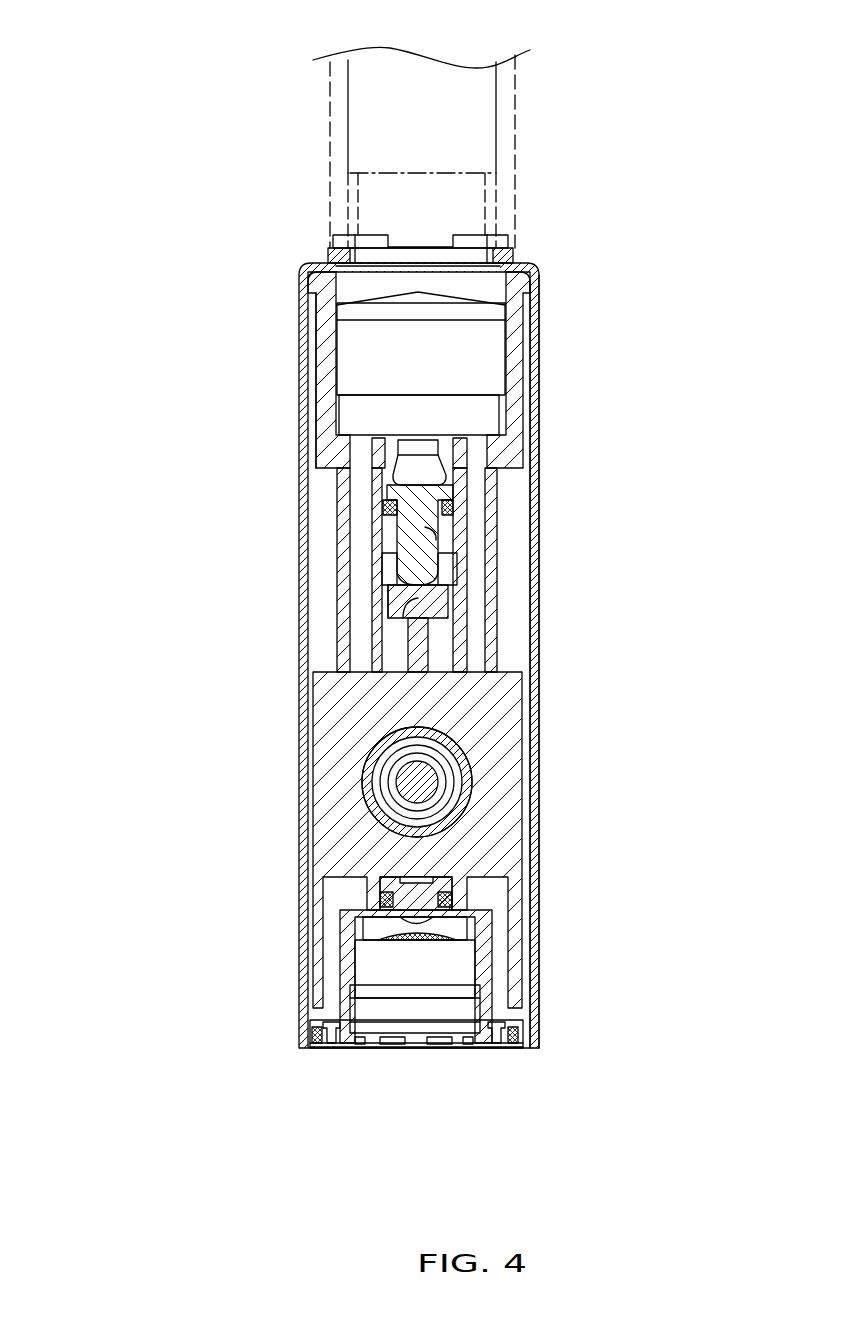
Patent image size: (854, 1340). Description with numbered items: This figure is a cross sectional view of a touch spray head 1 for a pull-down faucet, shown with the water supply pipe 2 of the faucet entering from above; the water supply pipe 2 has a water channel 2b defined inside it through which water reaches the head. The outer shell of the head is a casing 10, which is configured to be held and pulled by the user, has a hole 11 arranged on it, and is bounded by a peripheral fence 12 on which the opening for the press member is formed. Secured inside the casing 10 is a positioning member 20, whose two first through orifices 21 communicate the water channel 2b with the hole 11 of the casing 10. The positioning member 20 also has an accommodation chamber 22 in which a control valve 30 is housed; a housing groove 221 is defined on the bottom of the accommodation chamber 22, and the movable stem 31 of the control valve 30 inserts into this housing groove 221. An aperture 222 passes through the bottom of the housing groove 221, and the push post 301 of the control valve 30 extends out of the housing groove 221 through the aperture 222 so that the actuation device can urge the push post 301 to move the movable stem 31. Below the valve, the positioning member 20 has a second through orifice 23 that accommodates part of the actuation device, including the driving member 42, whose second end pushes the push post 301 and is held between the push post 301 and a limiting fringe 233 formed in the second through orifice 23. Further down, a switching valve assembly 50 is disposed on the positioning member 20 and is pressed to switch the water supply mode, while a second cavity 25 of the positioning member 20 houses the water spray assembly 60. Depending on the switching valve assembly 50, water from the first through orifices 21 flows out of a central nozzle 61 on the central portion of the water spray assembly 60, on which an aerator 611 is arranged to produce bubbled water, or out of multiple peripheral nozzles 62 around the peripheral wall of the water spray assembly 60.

The touch spray head 1 is at (650, 482).
The water supply pipe 2 is at (520, 148).
The water channel 2b is at (443, 80).
The casing 10 is at (297, 418).
The hole 11 is at (318, 1007).
The peripheral fence 12 is at (535, 652).
The positioning member 20 is at (534, 417).
The first through orifice 21 is at (358, 507).
The accommodation chamber 22 is at (338, 371).
The housing groove 221 is at (448, 453).
The aperture 222 is at (427, 528).
The second through orifice 23 is at (390, 572).
The limiting fringe 233 is at (387, 600).
The second cavity 25 is at (498, 927).
The control valve 30 is at (467, 360).
The movable stem 31 is at (372, 453).
The push post 301 is at (400, 538).
The driving member 42 is at (442, 600).
The switching valve assembly 50 is at (465, 756).
The water spray assembly 60 is at (342, 1052).
The central nozzle 61 is at (432, 1048).
The aerator 611 is at (462, 968).
The peripheral nozzles 62 is at (330, 1048).